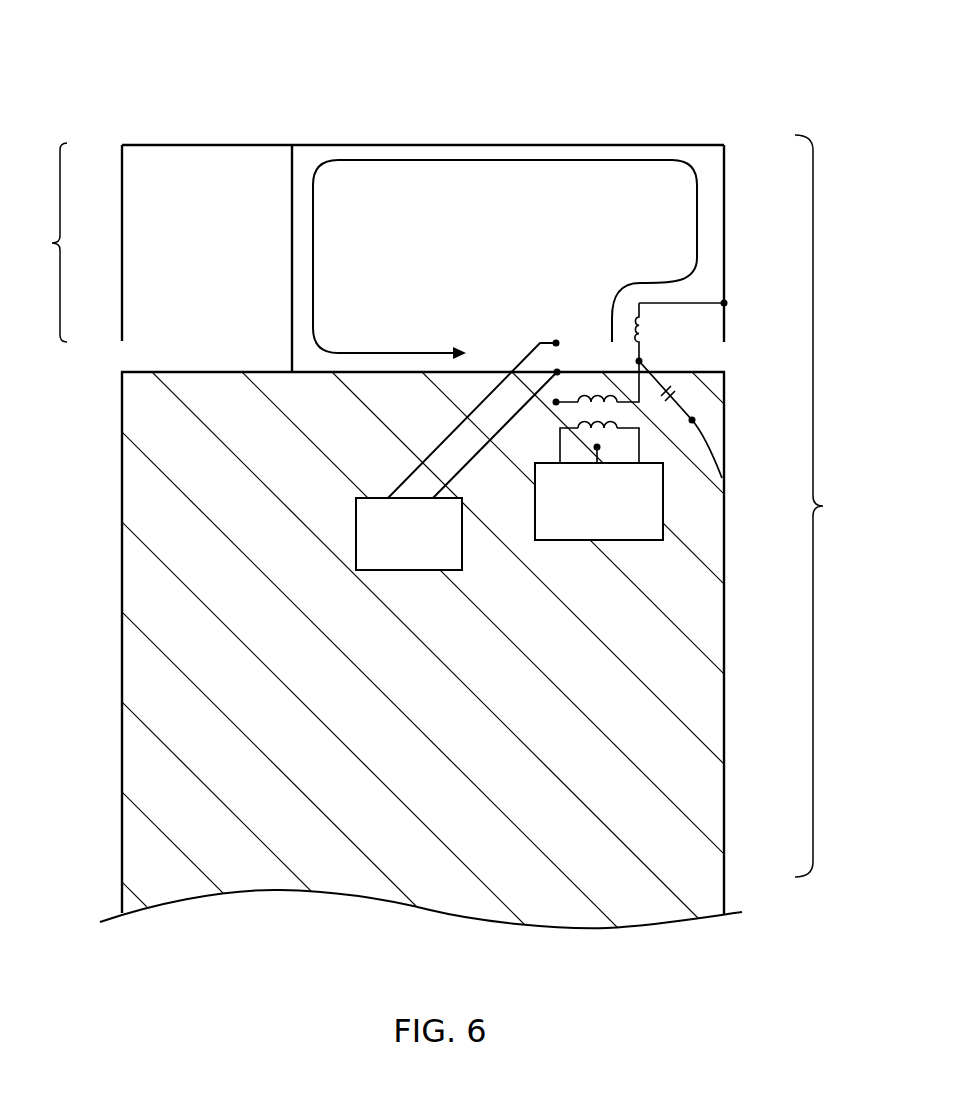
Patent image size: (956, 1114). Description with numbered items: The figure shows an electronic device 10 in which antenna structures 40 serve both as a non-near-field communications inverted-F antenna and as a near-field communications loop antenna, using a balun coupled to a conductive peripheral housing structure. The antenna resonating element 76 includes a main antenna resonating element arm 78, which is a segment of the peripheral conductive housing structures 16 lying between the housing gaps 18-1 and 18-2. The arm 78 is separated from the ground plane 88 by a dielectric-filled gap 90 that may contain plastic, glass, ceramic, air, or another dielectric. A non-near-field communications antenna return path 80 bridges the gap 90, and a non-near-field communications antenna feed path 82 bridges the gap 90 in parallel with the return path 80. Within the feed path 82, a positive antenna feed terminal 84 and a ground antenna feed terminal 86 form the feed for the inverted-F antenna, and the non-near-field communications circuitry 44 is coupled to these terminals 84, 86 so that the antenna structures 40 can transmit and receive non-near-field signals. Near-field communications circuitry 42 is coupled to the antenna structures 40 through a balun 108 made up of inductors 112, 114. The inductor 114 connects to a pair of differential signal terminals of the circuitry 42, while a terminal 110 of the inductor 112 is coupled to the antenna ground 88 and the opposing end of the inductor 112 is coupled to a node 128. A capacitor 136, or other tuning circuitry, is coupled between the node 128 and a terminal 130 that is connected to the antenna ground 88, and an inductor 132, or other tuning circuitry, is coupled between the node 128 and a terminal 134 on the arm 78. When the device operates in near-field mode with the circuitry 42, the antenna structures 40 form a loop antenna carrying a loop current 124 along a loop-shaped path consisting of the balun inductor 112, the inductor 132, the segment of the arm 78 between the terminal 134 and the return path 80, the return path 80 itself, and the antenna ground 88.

The device 10 is at (826, 506).
The peripheral conductive housing structures 16 is at (736, 104).
The gap 18-1 is at (737, 359).
The gap 18-2 is at (111, 354).
The antenna structures 40 is at (94, 82).
The near-field communications circuitry 42 is at (590, 540).
The non-near-field communications circuitry 44 is at (438, 570).
The antenna resonating element 76 is at (43, 242).
The main antenna resonating element arm 78 is at (432, 145).
The non-near-field communications antenna return path 80 is at (292, 242).
The non-near-field communications antenna feed path 82 is at (486, 235).
The positive antenna feed terminal 84 is at (550, 338).
The ground antenna feed terminal 86 is at (558, 370).
The ground plane 88 is at (130, 565).
The gap 90 is at (192, 157).
The balun 108 is at (722, 478).
The terminal 110 is at (553, 402).
The inductor 112 is at (582, 396).
The inductor 114 is at (572, 425).
The loop current 124 is at (406, 163).
The node 128 is at (636, 360).
The terminal 130 is at (669, 427).
The inductor 132 is at (648, 330).
The terminal 134 is at (726, 303).
The capacitor 136 is at (692, 383).